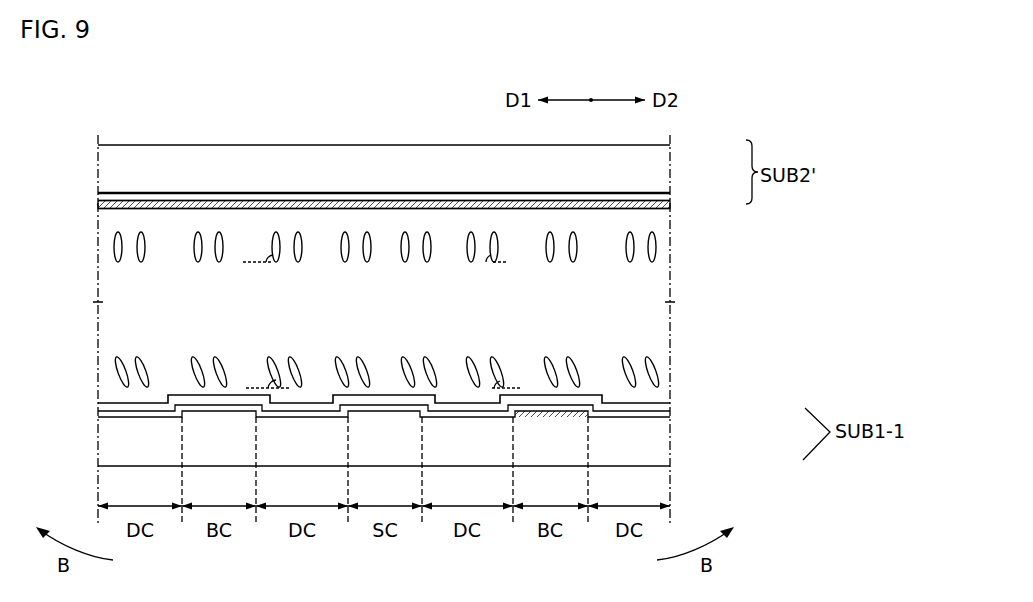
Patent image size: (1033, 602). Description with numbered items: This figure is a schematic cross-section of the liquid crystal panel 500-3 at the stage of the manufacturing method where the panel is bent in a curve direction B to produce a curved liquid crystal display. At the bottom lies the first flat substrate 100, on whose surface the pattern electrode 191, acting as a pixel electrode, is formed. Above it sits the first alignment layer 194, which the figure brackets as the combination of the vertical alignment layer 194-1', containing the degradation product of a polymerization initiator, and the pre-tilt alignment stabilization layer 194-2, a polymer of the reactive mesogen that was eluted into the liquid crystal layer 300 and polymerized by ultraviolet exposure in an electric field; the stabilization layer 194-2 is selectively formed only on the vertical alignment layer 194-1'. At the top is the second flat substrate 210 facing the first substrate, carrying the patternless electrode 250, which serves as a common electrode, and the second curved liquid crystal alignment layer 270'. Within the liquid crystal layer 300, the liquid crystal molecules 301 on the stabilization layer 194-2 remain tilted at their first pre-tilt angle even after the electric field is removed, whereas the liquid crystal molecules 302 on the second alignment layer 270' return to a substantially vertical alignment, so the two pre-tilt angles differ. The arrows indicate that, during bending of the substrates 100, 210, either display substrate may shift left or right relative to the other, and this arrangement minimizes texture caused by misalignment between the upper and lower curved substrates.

The liquid crystal panel 500-3 is at (378, 72).
The second flat substrate 210 is at (668, 172).
The patternless electrode 250 is at (668, 196).
The second curved liquid crystal alignment layer 270' is at (423, 205).
The liquid crystal layer 300 is at (90, 210).
The liquid crystal molecules 302 is at (145, 250).
The liquid crystal molecules 301 is at (145, 371).
The first alignment layer 194 is at (455, 404).
The pre-tilt alignment stabilization layer 194-2 is at (668, 403).
The vertical alignment layer 194-1' is at (434, 420).
The pattern electrode 191 is at (395, 418).
The first flat substrate 100 is at (668, 443).